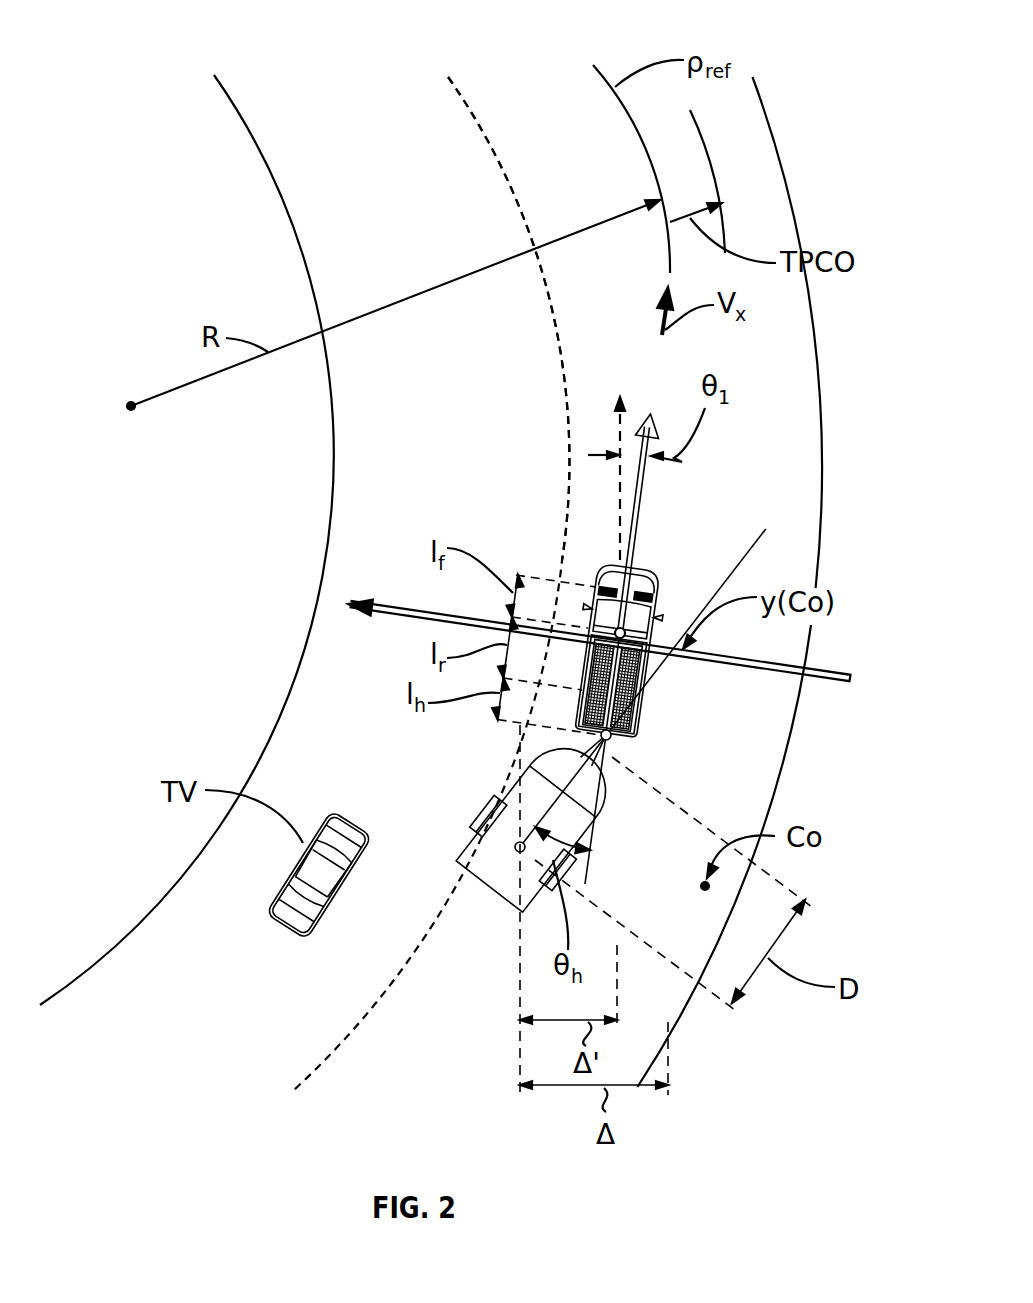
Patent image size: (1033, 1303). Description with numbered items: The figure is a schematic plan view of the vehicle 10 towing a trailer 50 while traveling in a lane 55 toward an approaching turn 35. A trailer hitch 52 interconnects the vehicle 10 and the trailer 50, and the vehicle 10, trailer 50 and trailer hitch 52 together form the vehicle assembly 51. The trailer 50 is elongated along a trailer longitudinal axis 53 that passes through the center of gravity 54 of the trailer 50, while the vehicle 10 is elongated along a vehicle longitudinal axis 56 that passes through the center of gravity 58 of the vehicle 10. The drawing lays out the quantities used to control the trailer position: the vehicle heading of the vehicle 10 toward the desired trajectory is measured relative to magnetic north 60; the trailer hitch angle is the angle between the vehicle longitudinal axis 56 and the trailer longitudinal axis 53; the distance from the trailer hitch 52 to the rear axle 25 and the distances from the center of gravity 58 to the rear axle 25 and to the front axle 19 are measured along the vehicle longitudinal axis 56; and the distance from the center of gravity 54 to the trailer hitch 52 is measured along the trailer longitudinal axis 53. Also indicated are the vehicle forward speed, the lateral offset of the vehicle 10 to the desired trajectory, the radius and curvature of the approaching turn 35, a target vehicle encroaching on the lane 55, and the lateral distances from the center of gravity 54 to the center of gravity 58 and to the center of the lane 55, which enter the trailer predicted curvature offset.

The vehicle 10 is at (617, 616).
The front axle 19 is at (630, 612).
The rear axle 25 is at (642, 683).
The approaching turn 35 is at (785, 177).
The trailer 50 is at (561, 745).
The vehicle assembly 51 is at (550, 372).
The trailer hitch 52 is at (612, 738).
The trailer longitudinal axis 53 is at (600, 840).
The center of gravity of the trailer 54 is at (515, 846).
The lane 55 is at (490, 142).
The vehicle longitudinal axis 56 is at (598, 806).
The center of gravity of the vehicle 58 is at (632, 633).
The magnetic north 60 is at (618, 440).